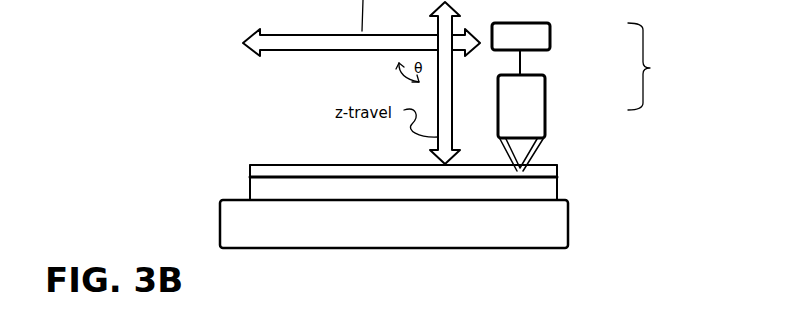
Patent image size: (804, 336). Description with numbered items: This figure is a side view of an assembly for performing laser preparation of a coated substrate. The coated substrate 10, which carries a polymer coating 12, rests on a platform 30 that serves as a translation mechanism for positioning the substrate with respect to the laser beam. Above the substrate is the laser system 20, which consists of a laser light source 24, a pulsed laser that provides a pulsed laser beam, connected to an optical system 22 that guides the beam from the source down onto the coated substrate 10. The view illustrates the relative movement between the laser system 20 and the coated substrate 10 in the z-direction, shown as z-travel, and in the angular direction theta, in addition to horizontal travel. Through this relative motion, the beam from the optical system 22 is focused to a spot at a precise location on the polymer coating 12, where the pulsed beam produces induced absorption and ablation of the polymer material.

The coated substrate 10 is at (268, 188).
The polymer coating 12 is at (537, 170).
The laser system 20 is at (650, 68).
The optical system 22 is at (535, 110).
The laser light source 24 is at (543, 40).
The platform 30 is at (240, 222).